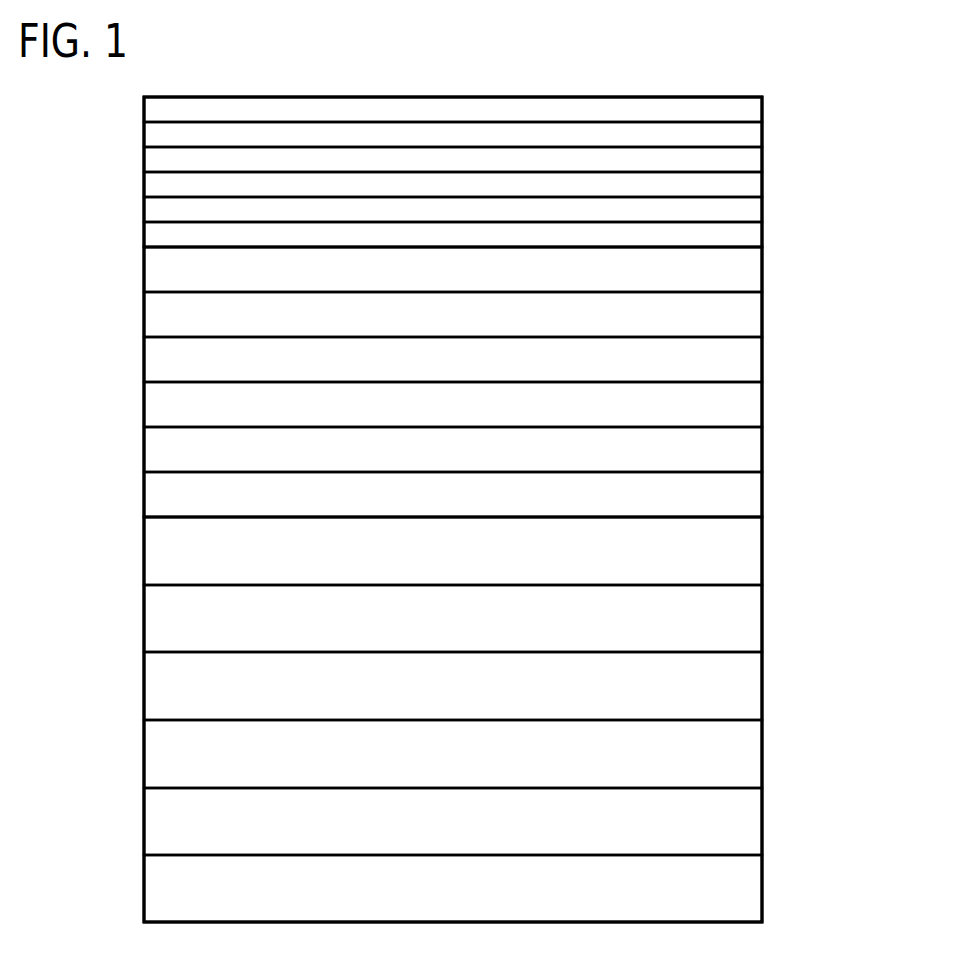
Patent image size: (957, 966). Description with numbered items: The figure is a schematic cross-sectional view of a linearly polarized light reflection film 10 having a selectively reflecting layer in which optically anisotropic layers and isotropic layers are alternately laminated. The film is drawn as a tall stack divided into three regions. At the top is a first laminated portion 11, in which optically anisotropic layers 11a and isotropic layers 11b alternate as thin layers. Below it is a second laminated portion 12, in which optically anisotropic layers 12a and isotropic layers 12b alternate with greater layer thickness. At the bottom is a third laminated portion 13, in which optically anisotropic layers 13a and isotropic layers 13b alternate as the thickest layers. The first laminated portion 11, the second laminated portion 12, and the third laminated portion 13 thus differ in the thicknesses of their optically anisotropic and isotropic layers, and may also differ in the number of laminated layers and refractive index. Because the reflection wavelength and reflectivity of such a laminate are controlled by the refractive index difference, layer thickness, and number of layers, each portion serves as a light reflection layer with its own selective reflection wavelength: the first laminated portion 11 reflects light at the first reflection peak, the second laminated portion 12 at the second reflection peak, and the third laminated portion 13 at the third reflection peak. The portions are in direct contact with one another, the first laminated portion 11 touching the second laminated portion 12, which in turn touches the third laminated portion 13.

The linearly polarized light reflection film 10 is at (705, 48).
The first laminated portion 11 is at (526, 172).
The optically anisotropic layer 11a is at (752, 108).
The isotropic layer 11b is at (752, 134).
The second laminated portion 12 is at (526, 382).
The optically anisotropic layer 12a is at (752, 268).
The isotropic layer 12b is at (752, 314).
The third laminated portion 13 is at (526, 719).
The optically anisotropic layer 13a is at (752, 550).
The isotropic layer 13b is at (752, 618).